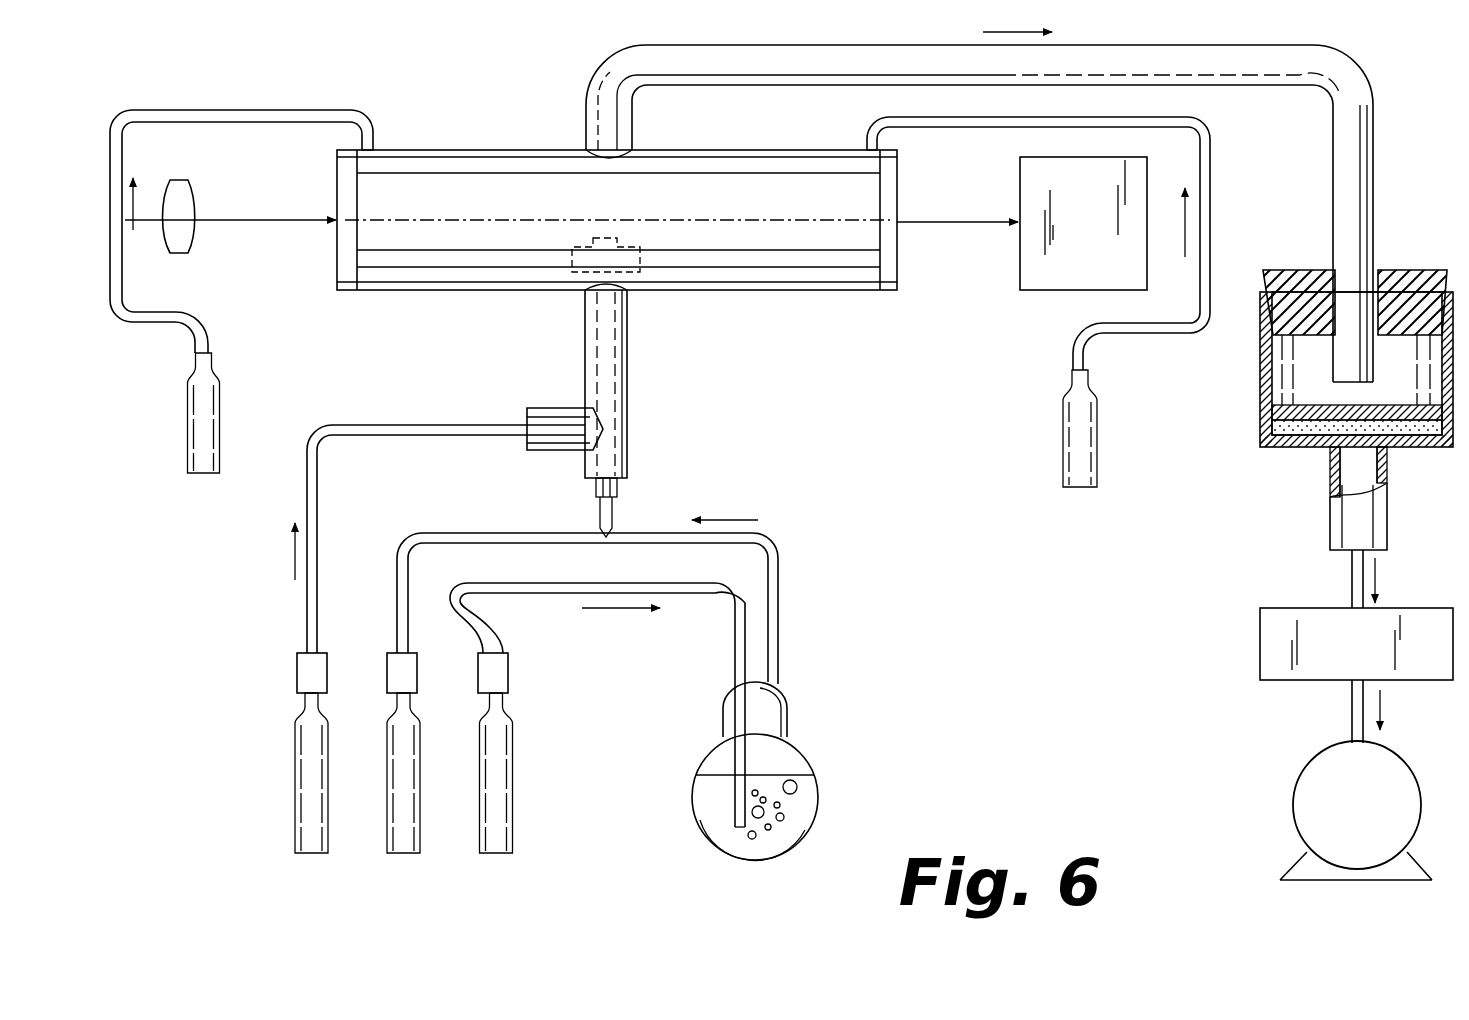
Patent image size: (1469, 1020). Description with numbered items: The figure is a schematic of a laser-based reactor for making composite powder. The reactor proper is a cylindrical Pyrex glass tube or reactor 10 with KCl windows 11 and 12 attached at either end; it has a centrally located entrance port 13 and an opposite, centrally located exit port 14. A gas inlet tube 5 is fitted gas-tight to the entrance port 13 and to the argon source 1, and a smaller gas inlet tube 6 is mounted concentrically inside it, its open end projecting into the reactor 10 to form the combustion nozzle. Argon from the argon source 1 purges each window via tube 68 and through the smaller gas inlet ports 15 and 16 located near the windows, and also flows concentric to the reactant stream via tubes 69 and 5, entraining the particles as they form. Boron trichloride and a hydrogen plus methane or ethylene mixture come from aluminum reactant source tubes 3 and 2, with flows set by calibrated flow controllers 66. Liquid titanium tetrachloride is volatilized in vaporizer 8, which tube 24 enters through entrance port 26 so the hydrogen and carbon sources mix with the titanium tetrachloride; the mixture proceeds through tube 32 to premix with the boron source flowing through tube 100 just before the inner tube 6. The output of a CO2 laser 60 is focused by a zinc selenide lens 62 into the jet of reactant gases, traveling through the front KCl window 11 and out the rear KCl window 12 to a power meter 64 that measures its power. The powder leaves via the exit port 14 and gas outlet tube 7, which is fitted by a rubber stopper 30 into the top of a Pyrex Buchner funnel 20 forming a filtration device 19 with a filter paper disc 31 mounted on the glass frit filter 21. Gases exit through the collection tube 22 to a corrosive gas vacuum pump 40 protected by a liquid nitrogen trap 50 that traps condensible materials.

The argon source 1 is at (200, 410).
The aluminum reactant source tube 2 is at (497, 850).
The aluminum reactant source tube 3 is at (400, 850).
The gas inlet tube 5 is at (627, 372).
The smaller gas inlet tube 6 is at (617, 490).
The gas outlet tube 7 is at (590, 78).
The vaporizer 8 is at (815, 772).
The reactor 10 is at (503, 290).
The KCl window 11 is at (343, 266).
The KCl window 12 is at (893, 277).
The entrance port 13 is at (627, 295).
The exit port 14 is at (586, 148).
The smaller gas inlet port 15 is at (372, 150).
The smaller gas inlet port 16 is at (867, 148).
The filtration device 19 is at (1255, 432).
The Pyrex Buchner funnel 20 is at (1265, 375).
The glass frit filter 21 is at (1300, 430).
The collection tube 22 is at (1373, 518).
The tube 24 is at (590, 583).
The entrance port 26 is at (735, 688).
The rubber stopper 30 is at (1410, 268).
The filter paper disc 31 is at (1272, 412).
The tube 32 is at (778, 612).
The corrosive gas vacuum pump 40 is at (1300, 772).
The liquid nitrogen trap 50 is at (1260, 640).
The CO2 laser 60 is at (212, 228).
The zinc selenide lens 62 is at (185, 195).
The power meter 64 is at (1035, 170).
The calibrated flow controller 66 is at (297, 675).
The tube 68 is at (250, 112).
The tube 69 is at (317, 490).
The tube 100 is at (545, 532).